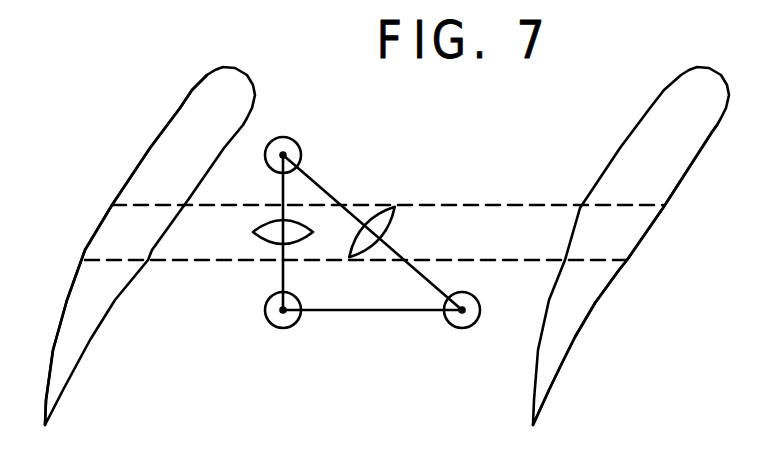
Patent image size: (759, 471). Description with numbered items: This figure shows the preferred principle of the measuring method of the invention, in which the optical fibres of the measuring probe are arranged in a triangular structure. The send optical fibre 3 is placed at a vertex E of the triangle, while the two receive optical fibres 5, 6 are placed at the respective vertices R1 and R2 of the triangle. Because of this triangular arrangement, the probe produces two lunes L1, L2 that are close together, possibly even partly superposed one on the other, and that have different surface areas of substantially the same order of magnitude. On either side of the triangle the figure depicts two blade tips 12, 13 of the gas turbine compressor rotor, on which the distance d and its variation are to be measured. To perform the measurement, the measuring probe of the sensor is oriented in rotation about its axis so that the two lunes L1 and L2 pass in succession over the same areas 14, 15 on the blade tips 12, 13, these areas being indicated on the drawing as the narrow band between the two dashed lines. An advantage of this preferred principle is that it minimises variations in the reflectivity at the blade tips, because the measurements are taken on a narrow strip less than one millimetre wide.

The blade tip 12 is at (182, 110).
The blade tip 13 is at (660, 103).
The area on blade tip 14 is at (108, 229).
The area on blade tip 15 is at (636, 236).
The send optical fibre 3 is at (302, 149).
The vertex E is at (283, 155).
The lune L1 is at (254, 230).
The lune L2 is at (390, 228).
The receive optical fibre 5 is at (264, 306).
The receive optical fibre 6 is at (481, 310).
The vertex R1 is at (283, 310).
The vertex R2 is at (462, 310).